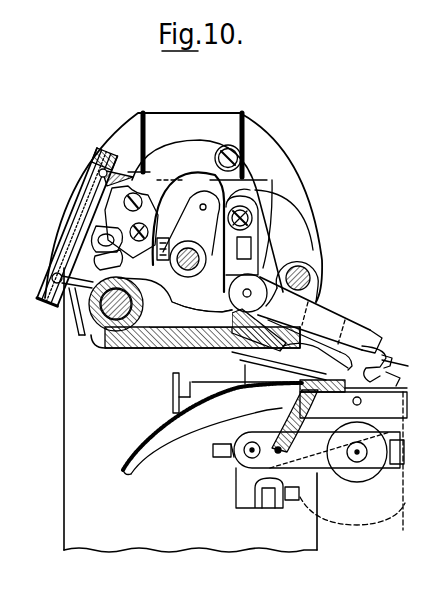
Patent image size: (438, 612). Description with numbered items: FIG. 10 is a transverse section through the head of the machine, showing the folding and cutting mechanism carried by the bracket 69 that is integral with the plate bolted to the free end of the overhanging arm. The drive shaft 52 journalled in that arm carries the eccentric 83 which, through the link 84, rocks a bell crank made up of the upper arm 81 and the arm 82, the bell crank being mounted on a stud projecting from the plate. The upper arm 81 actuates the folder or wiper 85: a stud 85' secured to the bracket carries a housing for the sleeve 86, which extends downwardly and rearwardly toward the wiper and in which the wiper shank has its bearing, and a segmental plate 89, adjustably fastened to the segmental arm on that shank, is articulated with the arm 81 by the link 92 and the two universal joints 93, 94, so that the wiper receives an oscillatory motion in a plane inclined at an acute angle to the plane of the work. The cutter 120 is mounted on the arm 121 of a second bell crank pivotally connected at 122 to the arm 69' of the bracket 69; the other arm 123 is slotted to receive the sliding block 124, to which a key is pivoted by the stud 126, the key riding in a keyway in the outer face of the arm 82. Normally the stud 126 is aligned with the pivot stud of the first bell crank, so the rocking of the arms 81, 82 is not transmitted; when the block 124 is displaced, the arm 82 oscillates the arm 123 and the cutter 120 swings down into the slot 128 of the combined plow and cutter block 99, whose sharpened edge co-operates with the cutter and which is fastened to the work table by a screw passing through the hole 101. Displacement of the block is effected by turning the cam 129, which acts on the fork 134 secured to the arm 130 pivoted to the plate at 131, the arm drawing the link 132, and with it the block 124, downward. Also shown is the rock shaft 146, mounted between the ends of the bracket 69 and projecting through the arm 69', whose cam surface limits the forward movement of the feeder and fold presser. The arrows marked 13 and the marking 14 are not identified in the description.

The reference direction arrows 13 is at (203, 178).
The base frame 14 is at (258, 192).
The drive shaft 52 is at (188, 270).
The bracket 69 is at (195, 324).
The arm of the bracket 69' is at (310, 284).
The upper bell-crank arm 81 is at (183, 192).
The bell-crank arm 82 is at (255, 242).
The eccentric 83 is at (188, 235).
The link 84 is at (188, 225).
The folder or wiper 85 is at (391, 365).
The stud 85' is at (113, 324).
The sleeve 86 is at (310, 345).
The segmental plate 89 is at (68, 316).
The link 92 is at (85, 212).
The universal joint 93 is at (98, 147).
The universal joint 94 is at (56, 274).
The combined plow and cutter block 99 is at (398, 389).
The hole 101 is at (8, 533).
The cutter 120 is at (369, 364).
The bell-crank arm 121 is at (356, 328).
The pivotal connection 122 is at (262, 269).
The bell-crank arm 123 is at (252, 266).
The block 124 is at (257, 220).
The stud 126 is at (238, 194).
The slot 128 is at (401, 373).
The cam 129 is at (92, 237).
The arm 130 is at (216, 148).
The pivot 131 is at (131, 222).
The link 132 is at (248, 196).
The fork 134 is at (101, 264).
The rock shaft 146 is at (312, 276).